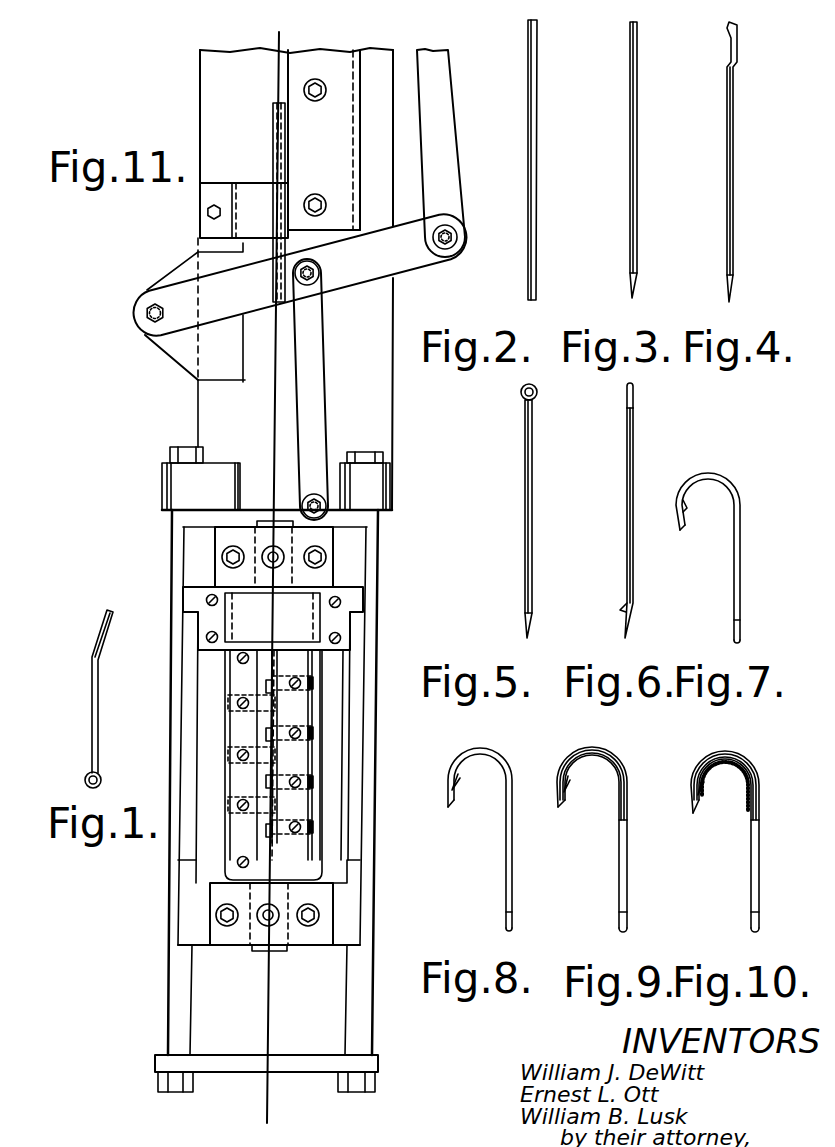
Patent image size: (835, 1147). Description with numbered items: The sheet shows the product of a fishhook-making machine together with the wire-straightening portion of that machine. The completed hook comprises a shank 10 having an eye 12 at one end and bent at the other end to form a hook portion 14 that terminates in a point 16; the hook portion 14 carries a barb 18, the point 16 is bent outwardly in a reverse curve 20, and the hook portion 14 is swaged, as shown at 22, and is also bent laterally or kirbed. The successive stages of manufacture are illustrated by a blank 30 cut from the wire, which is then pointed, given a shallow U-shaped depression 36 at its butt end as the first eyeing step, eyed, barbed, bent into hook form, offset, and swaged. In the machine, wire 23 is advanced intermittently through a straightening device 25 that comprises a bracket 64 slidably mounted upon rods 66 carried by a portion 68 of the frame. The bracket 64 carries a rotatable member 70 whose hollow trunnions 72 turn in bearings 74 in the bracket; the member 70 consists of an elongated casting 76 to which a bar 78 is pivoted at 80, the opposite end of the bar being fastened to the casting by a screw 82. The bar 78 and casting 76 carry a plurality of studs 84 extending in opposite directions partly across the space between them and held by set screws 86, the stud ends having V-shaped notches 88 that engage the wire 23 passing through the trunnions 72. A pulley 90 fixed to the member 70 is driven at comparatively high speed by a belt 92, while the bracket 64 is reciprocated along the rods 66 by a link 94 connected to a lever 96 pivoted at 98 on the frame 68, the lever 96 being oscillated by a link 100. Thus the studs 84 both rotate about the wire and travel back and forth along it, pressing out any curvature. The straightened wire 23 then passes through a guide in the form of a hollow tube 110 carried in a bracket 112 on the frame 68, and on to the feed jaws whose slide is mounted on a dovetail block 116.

In FIG. 1, the shank 10 is at (90, 700).
In FIG. 7, the shank 10 is at (740, 567).
In FIG. 8, the shank 10 is at (512, 862).
In FIG. 9, the shank 10 is at (627, 865).
In FIG. 10, the shank 10 is at (759, 866).
In FIG. 1, the eye 12 is at (101, 778).
In FIG. 5, the eye 12 is at (538, 392).
In FIG. 6, the eye 12 is at (634, 400).
In FIG. 7, the eye 12 is at (737, 620).
In FIG. 8, the eye 12 is at (509, 912).
In FIG. 9, the eye 12 is at (624, 910).
In FIG. 10, the eye 12 is at (756, 912).
In FIG. 1, the hook portion 14 is at (108, 627).
In FIG. 7, the hook portion 14 is at (715, 475).
In FIG. 8, the hook portion 14 is at (478, 750).
In FIG. 9, the hook portion 14 is at (585, 750).
In FIG. 10, the hook portion 14 is at (730, 752).
In FIG. 1, the point 16 is at (93, 662).
In FIG. 3, the point 16 is at (636, 292).
In FIG. 4, the point 16 is at (732, 292).
In FIG. 5, the point 16 is at (525, 625).
In FIG. 6, the point 16 is at (630, 630).
In FIG. 7, the point 16 is at (688, 520).
In FIG. 8, the point 16 is at (452, 800).
In FIG. 9, the point 16 is at (565, 800).
In FIG. 10, the point 16 is at (700, 800).
In FIG. 6, the barb 18 is at (617, 612).
In FIG. 7, the barb 18 is at (688, 505).
In FIG. 9, the barb 18 is at (570, 785).
In FIG. 10, the barb 18 is at (703, 785).
In FIG. 8, the reverse curve 20 is at (455, 782).
In FIG. 9, the reverse curve 20 is at (562, 785).
In FIG. 10, the reverse curve 20 is at (695, 788).
In FIG. 9, the swaged portion 22 is at (612, 760).
In FIG. 10, the swaged portion 22 is at (742, 762).
In FIG. 11, the wire 23 is at (272, 992).
In FIG. 11, the straightening device 25 is at (378, 665).
In FIG. 2, the blank 30 is at (537, 212).
In FIG. 3, the blank 30 is at (637, 215).
In FIG. 4, the blank 30 is at (733, 218).
In FIG. 5, the blank 30 is at (532, 540).
In FIG. 6, the blank 30 is at (632, 557).
In FIG. 4, the conveyors 36 is at (732, 48).
In FIG. 11, the bracket 64 is at (335, 783).
In FIG. 11, the rods 66 is at (182, 1023).
In FIG. 11, the frame portion 68 is at (372, 312).
In FIG. 11, the rotatable member 70 is at (257, 868).
In FIG. 11, the hollow trunnions 72 is at (265, 522).
In FIG. 11, the bearings 74 is at (308, 898).
In FIG. 11, the elongated casting 76 is at (300, 660).
In FIG. 11, the bar 78 is at (237, 772).
In FIG. 11, the pivot 80 is at (250, 860).
In FIG. 11, the screw 82 is at (243, 652).
In FIG. 11, the studs 84 is at (260, 807).
In FIG. 11, the set screws 86 is at (295, 733).
In FIG. 11, the V-shaped notches 88 is at (302, 753).
In FIG. 11, the pulley 90 is at (307, 592).
In FIG. 11, the belt 92 is at (303, 627).
In FIG. 11, the link 94 is at (312, 395).
In FIG. 11, the lever 96 is at (207, 295).
In FIG. 11, the pivot 98 is at (145, 325).
In FIG. 11, the link 100 is at (440, 145).
In FIG. 11, the hollow tube 110 is at (285, 160).
In FIG. 11, the bracket 112 is at (255, 192).
In FIG. 11, the dovetail block 116 is at (337, 62).